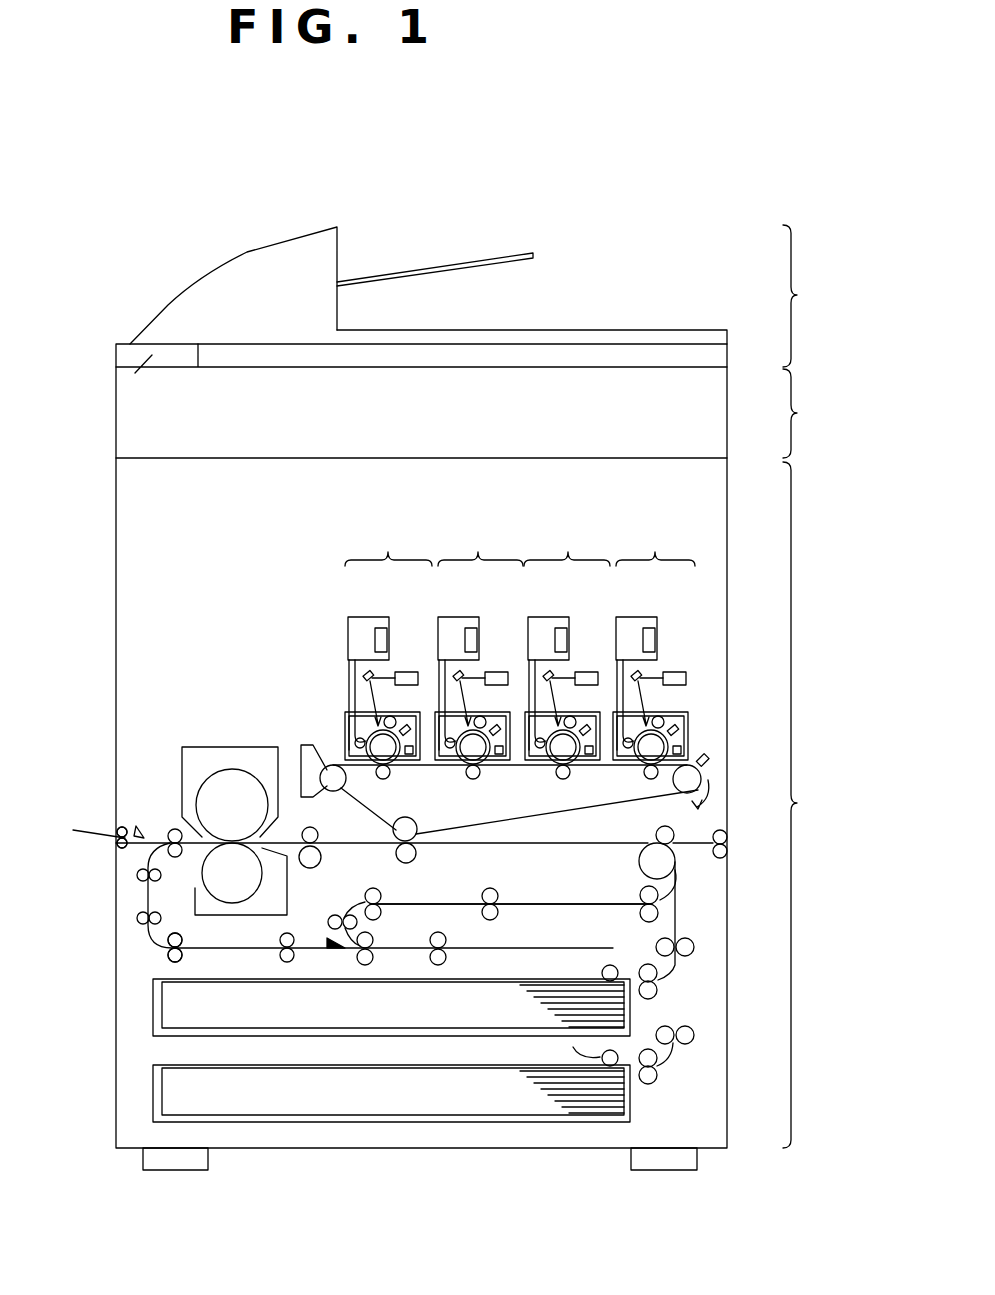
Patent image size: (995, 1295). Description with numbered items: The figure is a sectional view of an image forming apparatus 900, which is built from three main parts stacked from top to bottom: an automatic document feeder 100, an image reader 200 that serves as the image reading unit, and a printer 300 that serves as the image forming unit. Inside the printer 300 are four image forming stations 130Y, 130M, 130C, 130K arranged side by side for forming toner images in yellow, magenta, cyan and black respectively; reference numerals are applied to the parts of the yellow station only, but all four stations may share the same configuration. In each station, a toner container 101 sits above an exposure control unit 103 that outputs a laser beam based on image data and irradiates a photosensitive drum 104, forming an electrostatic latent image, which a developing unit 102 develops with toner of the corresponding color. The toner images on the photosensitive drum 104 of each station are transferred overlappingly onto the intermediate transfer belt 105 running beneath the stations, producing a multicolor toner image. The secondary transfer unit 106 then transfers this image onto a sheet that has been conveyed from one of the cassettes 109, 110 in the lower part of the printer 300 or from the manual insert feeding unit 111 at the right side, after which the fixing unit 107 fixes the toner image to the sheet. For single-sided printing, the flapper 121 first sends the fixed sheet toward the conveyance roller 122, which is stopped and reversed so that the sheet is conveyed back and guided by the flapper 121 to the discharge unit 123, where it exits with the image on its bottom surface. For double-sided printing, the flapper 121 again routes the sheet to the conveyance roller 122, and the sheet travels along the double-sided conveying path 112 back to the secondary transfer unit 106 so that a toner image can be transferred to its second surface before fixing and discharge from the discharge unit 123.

The image forming apparatus 900 is at (662, 197).
The automatic document feeder (ADF) 100 is at (816, 296).
The image reader 200 is at (816, 413).
The printer 300 is at (816, 805).
The image forming station 130Y is at (367, 666).
The image forming station 130M is at (479, 652).
The image forming station 130C is at (567, 652).
The image forming station 130K is at (654, 652).
The toner container 101 is at (368, 617).
The developing unit 102 is at (347, 738).
The exposure control unit 103 is at (407, 672).
The photosensitive drum 104 is at (390, 776).
The intermediate transfer belt 105 is at (597, 807).
The secondary transfer unit 106 is at (395, 845).
The fixing unit 107 is at (240, 747).
The cassette 109 is at (153, 1094).
The cassette 110 is at (153, 1010).
The manual insert feeding unit 111 is at (728, 838).
The double-sided conveying path 112 is at (553, 904).
The flapper 121 is at (143, 824).
The conveyance roller 122 is at (183, 955).
The discharge unit 123 is at (115, 830).